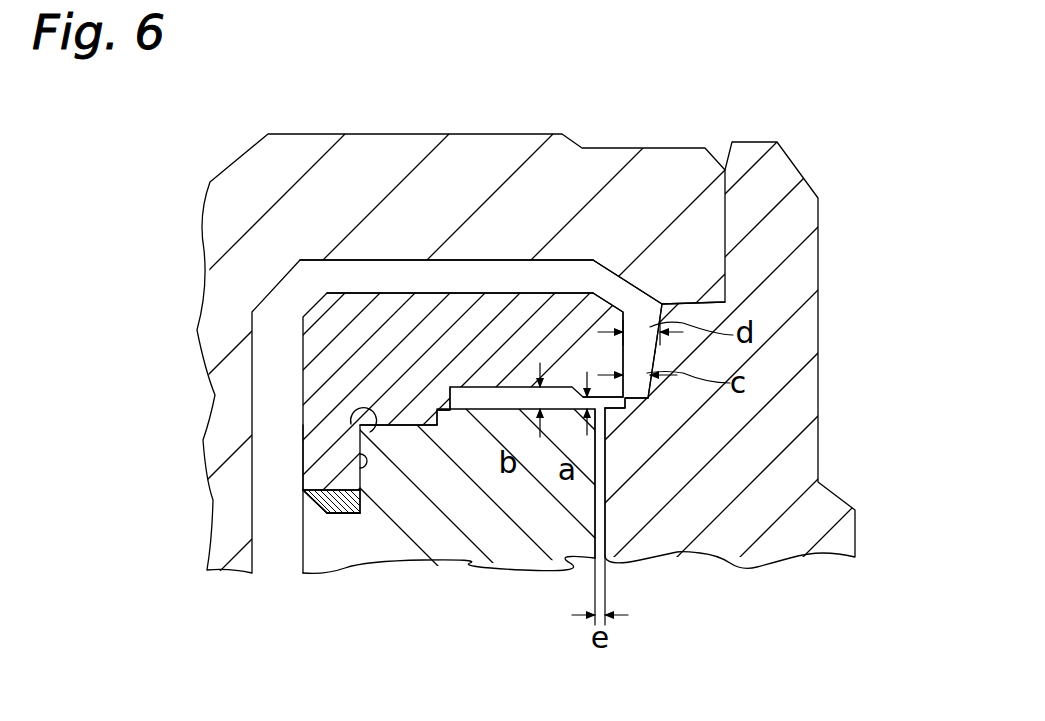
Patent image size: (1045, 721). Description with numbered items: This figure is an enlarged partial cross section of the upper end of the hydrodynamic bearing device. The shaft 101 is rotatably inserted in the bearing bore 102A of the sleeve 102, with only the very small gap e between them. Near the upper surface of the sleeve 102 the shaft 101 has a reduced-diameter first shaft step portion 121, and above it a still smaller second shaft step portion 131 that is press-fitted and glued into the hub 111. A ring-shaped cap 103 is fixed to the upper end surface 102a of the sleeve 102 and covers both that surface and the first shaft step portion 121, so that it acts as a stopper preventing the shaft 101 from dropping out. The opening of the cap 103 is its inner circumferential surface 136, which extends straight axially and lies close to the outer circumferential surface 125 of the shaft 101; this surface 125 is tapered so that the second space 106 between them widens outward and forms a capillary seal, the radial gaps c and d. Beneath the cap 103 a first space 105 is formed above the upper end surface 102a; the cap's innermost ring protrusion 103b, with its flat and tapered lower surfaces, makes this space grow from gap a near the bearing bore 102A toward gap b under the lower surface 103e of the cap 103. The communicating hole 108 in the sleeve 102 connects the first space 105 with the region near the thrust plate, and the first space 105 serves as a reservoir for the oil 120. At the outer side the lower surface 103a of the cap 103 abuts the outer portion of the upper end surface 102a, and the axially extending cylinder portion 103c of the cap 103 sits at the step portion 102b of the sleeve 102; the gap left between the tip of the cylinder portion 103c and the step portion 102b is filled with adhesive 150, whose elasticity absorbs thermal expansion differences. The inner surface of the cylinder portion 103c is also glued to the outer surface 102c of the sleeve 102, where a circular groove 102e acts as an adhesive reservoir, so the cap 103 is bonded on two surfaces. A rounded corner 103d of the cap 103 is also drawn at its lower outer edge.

The shaft 101 is at (797, 313).
The sleeve 102 is at (497, 548).
The bearing bore 102A is at (605, 518).
The upper end surface of the sleeve 102a is at (407, 405).
The step portion 102b is at (343, 528).
The outer surface of the sleeve 102c is at (337, 497).
The circular groove 102e is at (352, 464).
The cap 103 is at (391, 282).
The lower surface of the outer portion of the cap 103a is at (407, 405).
The ring protrusion 103b is at (610, 400).
The cylinder portion 103c is at (323, 445).
The seal rounded corner 103d is at (351, 408).
The lower surface of the cap 103e is at (507, 402).
The first space 105 is at (477, 395).
The second space 106 is at (575, 332).
The communicating hole 108 is at (600, 493).
The hub 111 is at (477, 170).
The oil 120 is at (647, 397).
The first shaft step portion 121 is at (650, 400).
The outer circumferential surface 125 is at (647, 353).
The second shaft step portion 131 is at (700, 302).
The inner circumferential surface 136 is at (626, 328).
The adhesive 150 is at (303, 512).